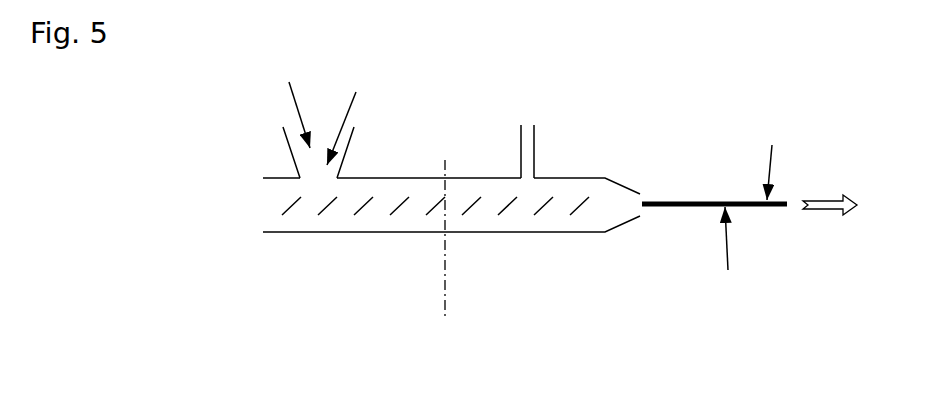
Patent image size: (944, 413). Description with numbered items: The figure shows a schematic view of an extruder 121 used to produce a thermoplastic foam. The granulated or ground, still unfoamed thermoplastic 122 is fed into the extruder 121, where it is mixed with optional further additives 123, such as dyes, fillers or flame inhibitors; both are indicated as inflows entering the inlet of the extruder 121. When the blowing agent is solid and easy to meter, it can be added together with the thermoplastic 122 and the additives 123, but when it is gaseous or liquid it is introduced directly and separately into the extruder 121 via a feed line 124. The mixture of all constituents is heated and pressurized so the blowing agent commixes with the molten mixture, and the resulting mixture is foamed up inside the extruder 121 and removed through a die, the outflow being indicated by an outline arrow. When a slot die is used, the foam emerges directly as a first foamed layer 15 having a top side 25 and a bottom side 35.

The extruder 121 is at (409, 215).
The thermoplastic 122 is at (285, 98).
The further additives 123 is at (350, 105).
The feed line 124 is at (531, 162).
The first layer 15 is at (677, 198).
The top side 25 is at (780, 159).
The bottom side 35 is at (741, 253).